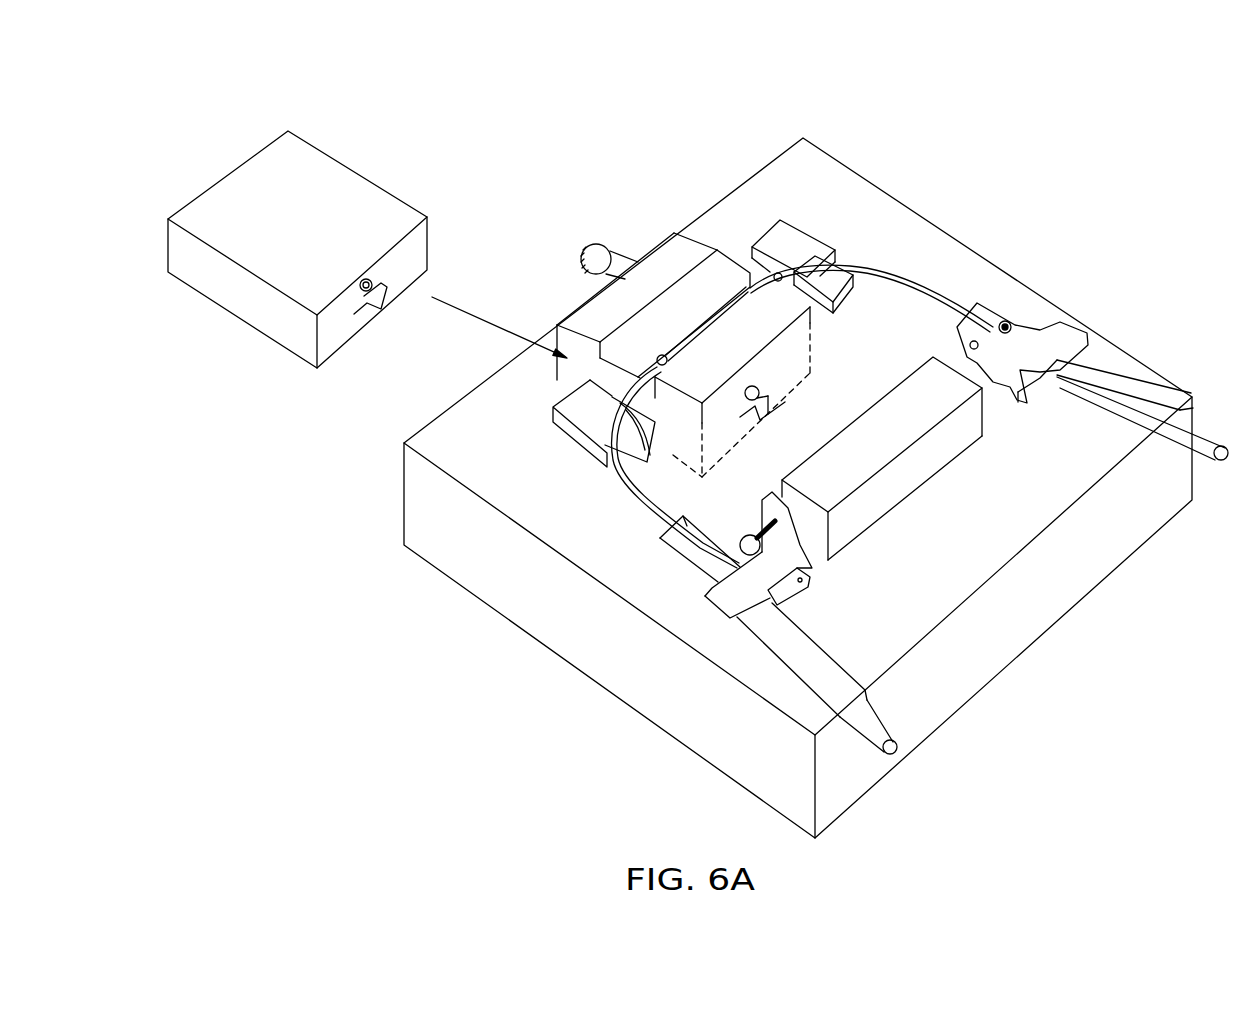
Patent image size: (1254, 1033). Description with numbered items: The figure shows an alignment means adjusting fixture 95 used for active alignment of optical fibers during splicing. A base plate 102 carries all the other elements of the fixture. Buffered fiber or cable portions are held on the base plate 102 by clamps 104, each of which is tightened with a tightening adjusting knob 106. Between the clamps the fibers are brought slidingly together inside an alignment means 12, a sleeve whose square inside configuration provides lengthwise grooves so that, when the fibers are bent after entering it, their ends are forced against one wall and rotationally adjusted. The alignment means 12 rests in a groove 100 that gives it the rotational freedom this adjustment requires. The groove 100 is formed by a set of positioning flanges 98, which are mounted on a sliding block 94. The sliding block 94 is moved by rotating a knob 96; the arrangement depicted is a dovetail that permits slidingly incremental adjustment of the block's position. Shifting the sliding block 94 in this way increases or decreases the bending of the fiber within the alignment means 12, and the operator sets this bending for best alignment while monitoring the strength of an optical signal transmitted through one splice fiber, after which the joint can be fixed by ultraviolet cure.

The alignment means 12 is at (729, 288).
The sliding block 94 is at (659, 239).
The alignment means adjusting fixture 95 is at (1073, 628).
The knob 96 is at (587, 225).
The positioning flanges 98 is at (712, 261).
The groove 100 is at (626, 366).
The base plate 102 is at (817, 155).
The clamps 104 is at (700, 608).
The tightening adjusting knobs 106 is at (1018, 297).